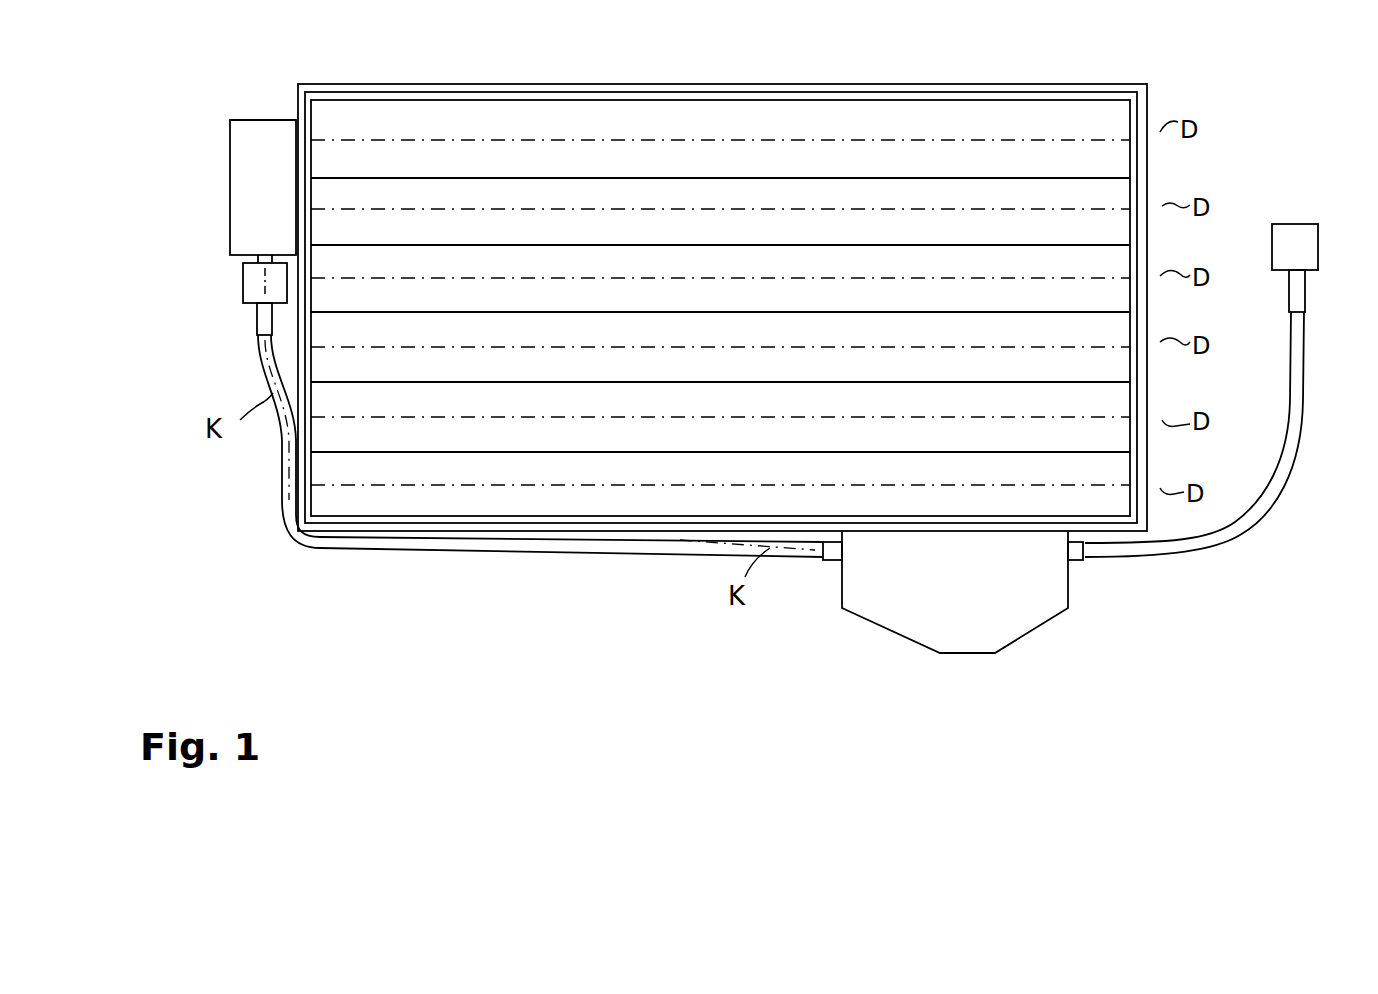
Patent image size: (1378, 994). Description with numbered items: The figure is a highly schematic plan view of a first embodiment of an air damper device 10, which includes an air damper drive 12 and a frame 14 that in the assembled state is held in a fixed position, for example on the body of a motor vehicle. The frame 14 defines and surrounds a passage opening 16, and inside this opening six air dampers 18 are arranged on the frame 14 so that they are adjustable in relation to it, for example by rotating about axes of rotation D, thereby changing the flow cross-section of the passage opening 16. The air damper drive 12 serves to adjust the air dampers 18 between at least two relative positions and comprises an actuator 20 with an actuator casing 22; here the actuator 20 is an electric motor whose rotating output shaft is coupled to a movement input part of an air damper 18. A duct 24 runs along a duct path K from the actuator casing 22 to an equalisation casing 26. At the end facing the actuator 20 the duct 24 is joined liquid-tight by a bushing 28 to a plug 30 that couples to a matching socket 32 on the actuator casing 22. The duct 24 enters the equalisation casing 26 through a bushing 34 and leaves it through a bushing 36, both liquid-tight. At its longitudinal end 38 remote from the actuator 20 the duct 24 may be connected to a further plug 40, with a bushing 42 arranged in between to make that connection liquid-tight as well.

The air damper device 10 is at (1200, 56).
The air damper drive 12 is at (475, 582).
The frame 14 is at (732, 92).
The passage opening 16 is at (936, 120).
The air damper 18 is at (1013, 122).
The actuator 20 is at (276, 199).
The actuator casing 22 is at (245, 120).
The duct 24 is at (312, 548).
The equalisation casing 26 is at (972, 603).
The bushing 28 is at (257, 322).
The plug 30 is at (243, 285).
The socket 32 is at (258, 264).
The bushing 34 is at (822, 558).
The bushing 36 is at (1075, 562).
The longitudinal end 38 is at (1330, 298).
The plug 40 is at (1312, 252).
The bushing 42 is at (1292, 294).